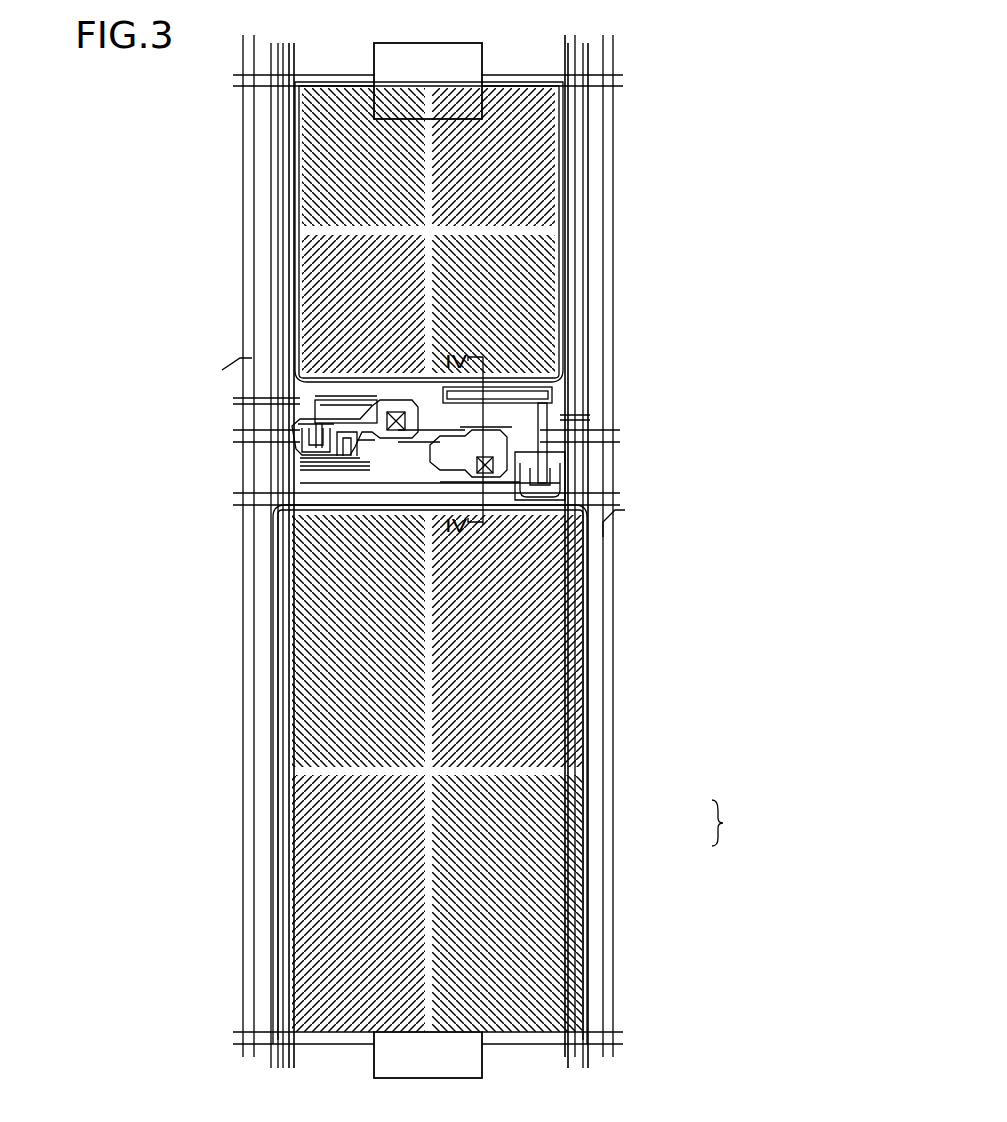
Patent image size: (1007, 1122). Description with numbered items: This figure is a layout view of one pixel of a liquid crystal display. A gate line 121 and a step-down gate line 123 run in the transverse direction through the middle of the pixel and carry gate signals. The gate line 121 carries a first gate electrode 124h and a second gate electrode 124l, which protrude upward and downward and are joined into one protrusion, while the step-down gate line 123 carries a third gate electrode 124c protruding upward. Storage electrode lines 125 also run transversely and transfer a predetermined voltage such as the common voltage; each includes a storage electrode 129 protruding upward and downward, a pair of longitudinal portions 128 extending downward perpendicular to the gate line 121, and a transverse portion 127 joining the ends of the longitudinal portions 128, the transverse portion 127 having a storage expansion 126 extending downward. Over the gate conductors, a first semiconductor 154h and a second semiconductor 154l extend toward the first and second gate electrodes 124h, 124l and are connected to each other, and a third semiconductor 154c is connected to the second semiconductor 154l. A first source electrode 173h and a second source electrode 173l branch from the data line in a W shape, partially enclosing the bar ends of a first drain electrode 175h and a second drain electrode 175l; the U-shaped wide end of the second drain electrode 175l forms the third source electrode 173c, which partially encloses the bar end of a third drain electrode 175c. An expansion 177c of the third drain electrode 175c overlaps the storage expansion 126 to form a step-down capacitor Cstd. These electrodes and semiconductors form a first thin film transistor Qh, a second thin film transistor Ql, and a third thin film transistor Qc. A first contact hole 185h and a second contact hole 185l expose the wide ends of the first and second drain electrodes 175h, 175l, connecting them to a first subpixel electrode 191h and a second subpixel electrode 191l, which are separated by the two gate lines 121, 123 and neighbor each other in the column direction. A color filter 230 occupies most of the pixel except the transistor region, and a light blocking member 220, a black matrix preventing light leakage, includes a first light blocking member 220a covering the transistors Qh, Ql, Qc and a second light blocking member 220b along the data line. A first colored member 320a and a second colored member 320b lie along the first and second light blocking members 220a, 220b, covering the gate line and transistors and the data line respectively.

The storage electrode line 125 is at (520, 86).
The storage electrode 129 is at (568, 106).
The longitudinal portions 128 is at (565, 193).
The transverse portion 127 is at (300, 398).
The storage expansion 126 is at (595, 417).
The step-down gate line 123 is at (640, 503).
The gate line 121 is at (620, 430).
The first light blocking member 220a is at (350, 410).
The second light blocking member 220b is at (575, 137).
The light blocking member 220 is at (735, 823).
The color filter 230 is at (255, 165).
The first colored member 320a is at (222, 370).
The second colored member 320b is at (240, 120).
The first subpixel electrode 191h is at (565, 219).
The second subpixel electrode 191l is at (300, 700).
The second gate electrode 124l is at (335, 345).
The first gate electrode 124h is at (290, 520).
The third gate electrode 124c is at (590, 477).
The second source electrode 173l is at (300, 385).
The first source electrode 173h is at (235, 505).
The third source electrode 173c is at (580, 500).
The first drain electrode 175h is at (298, 413).
The second drain electrode 175l is at (300, 512).
The third drain electrode 175c is at (595, 458).
The first semiconductor 154h is at (300, 448).
The second semiconductor 154l is at (295, 522).
The third semiconductor 154c is at (540, 470).
The first contact hole 185h is at (290, 592).
The second contact hole 185l is at (545, 478).
The expansion of the third drain electrode 177c is at (595, 378).
The first thin film transistor Qh is at (270, 418).
The second thin film transistor Ql is at (345, 360).
The third thin film transistor Qc is at (560, 512).
The step-down capacitor Cstd is at (525, 380).